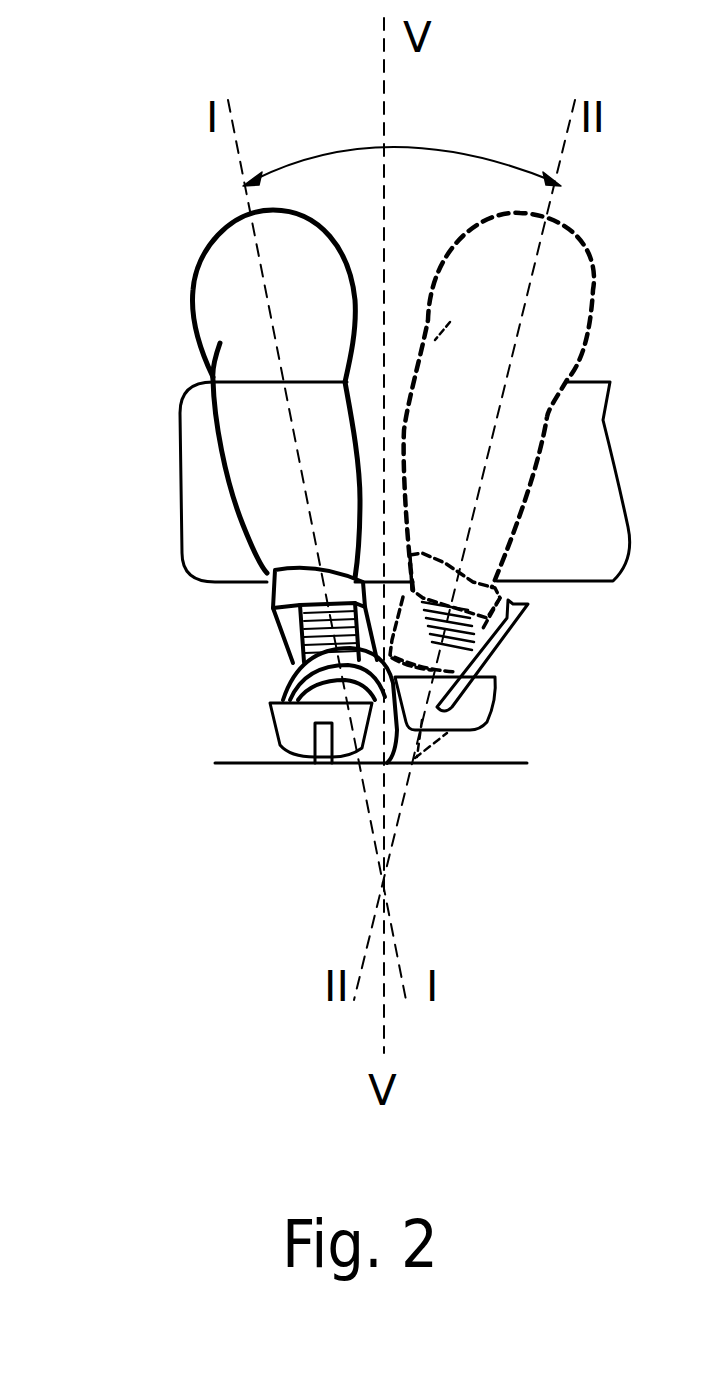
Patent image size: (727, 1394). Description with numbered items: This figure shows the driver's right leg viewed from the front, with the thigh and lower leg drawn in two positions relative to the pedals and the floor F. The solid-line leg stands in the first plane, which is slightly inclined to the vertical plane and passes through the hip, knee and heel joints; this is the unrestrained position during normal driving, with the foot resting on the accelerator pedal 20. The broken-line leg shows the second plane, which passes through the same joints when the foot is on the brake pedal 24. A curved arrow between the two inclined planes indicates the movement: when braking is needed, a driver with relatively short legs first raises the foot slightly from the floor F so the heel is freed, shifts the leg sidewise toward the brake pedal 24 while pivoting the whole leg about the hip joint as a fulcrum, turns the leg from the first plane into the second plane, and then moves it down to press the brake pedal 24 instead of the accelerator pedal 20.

The accelerator pedal 20 is at (315, 723).
The brake pedal 24 is at (468, 708).
The floor F is at (255, 763).